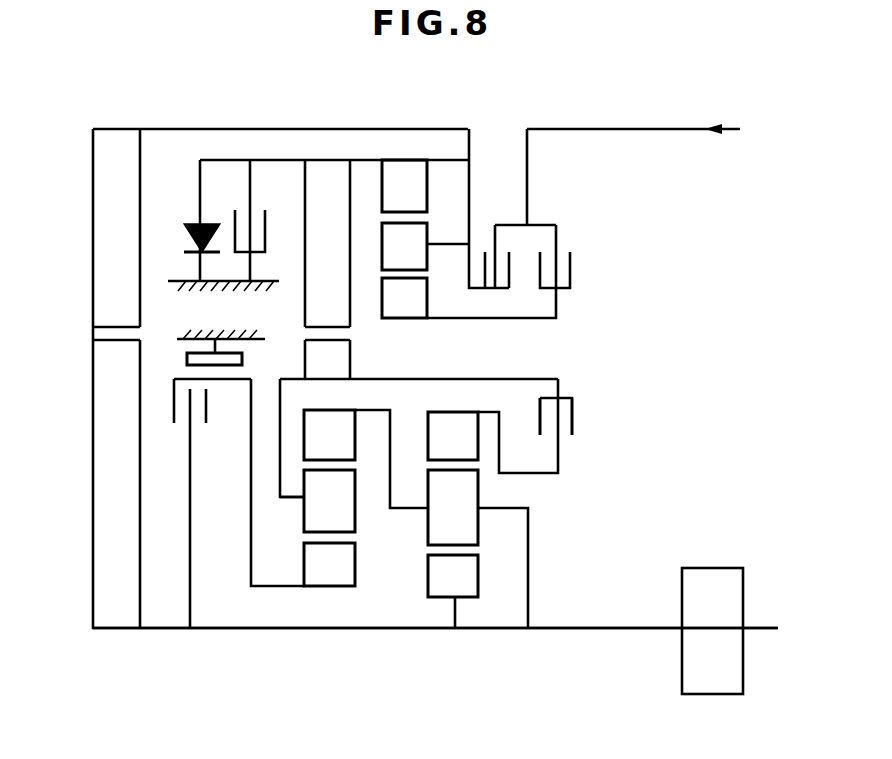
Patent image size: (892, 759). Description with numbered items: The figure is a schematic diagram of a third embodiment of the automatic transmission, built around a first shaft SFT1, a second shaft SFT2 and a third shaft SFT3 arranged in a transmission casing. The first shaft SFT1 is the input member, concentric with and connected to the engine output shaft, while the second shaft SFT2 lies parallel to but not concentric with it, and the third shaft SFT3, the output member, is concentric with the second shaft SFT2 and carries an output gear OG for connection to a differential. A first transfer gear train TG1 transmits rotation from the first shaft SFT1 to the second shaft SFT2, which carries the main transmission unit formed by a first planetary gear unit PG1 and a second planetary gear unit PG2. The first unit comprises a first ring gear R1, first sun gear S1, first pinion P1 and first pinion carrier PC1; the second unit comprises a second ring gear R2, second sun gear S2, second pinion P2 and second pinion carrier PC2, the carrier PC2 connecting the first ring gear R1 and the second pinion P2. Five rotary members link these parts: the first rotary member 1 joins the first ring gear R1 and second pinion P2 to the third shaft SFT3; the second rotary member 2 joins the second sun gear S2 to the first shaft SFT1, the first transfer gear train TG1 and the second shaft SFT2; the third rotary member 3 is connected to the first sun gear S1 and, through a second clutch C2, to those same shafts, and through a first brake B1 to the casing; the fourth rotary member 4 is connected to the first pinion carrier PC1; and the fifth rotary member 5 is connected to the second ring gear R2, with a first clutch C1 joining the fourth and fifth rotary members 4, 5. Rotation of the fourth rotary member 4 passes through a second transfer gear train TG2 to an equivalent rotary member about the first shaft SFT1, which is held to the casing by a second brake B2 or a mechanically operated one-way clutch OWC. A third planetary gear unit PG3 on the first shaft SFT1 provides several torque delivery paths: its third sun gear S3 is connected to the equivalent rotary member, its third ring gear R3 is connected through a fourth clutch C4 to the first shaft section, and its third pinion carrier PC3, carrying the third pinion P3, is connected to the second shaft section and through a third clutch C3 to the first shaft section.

The first rotary member 1 is at (531, 560).
The second rotary member 2 is at (460, 609).
The third rotary member 3 is at (248, 482).
The fourth rotary member 4 is at (273, 158).
The fifth rotary member 5 is at (562, 474).
The first transfer gear train TG1 is at (411, 378).
The second transfer gear train TG2 is at (354, 269).
The first shaft SFT1 is at (468, 127).
The second shaft SFT2 is at (248, 632).
The third shaft SFT3 is at (630, 632).
The first clutch C1 is at (572, 416).
The second clutch C2 is at (202, 503).
The third clutch C3 is at (490, 208).
The fourth clutch C4 is at (555, 240).
The first brake B1 is at (226, 350).
The second brake B2 is at (265, 220).
The one-way clutch OWC is at (186, 220).
The first planetary gear unit PG1 is at (308, 547).
The second planetary gear unit PG2 is at (452, 548).
The third planetary gear unit PG3 is at (419, 193).
The first sun gear S1 is at (329, 564).
The second sun gear S2 is at (453, 576).
The third sun gear S3 is at (404, 186).
The first pinion P1 is at (329, 501).
The second pinion P2 is at (453, 507).
The third pinion P3 is at (404, 246).
The first ring gear R1 is at (329, 435).
The second ring gear R2 is at (453, 436).
The third ring gear R3 is at (404, 298).
The first pinion carrier PC1 is at (289, 499).
The second pinion carrier PC2 is at (399, 510).
The third pinion carrier PC3 is at (448, 243).
The output gear OG is at (712, 566).